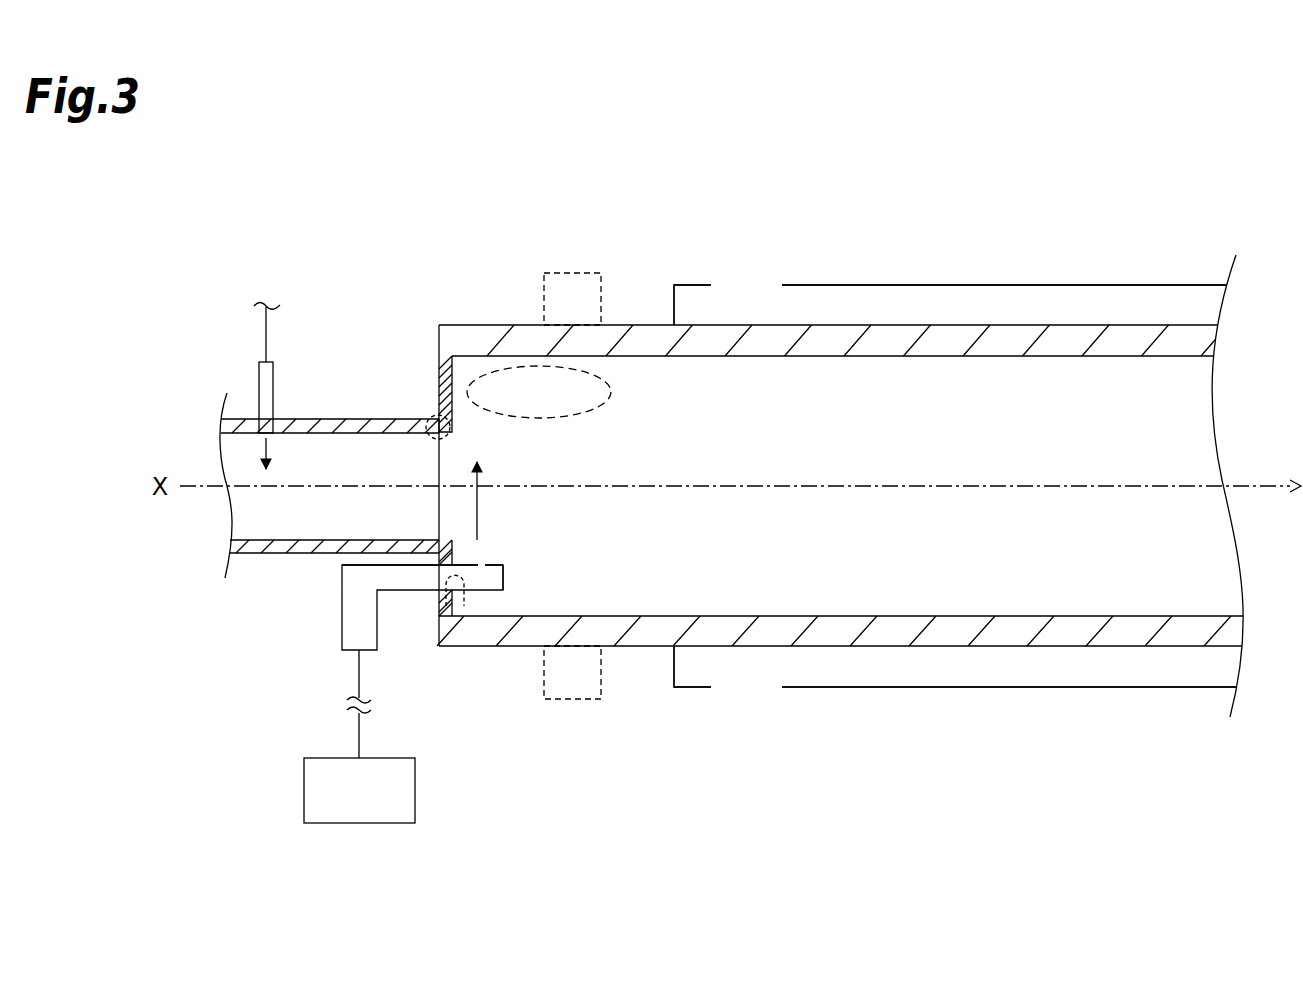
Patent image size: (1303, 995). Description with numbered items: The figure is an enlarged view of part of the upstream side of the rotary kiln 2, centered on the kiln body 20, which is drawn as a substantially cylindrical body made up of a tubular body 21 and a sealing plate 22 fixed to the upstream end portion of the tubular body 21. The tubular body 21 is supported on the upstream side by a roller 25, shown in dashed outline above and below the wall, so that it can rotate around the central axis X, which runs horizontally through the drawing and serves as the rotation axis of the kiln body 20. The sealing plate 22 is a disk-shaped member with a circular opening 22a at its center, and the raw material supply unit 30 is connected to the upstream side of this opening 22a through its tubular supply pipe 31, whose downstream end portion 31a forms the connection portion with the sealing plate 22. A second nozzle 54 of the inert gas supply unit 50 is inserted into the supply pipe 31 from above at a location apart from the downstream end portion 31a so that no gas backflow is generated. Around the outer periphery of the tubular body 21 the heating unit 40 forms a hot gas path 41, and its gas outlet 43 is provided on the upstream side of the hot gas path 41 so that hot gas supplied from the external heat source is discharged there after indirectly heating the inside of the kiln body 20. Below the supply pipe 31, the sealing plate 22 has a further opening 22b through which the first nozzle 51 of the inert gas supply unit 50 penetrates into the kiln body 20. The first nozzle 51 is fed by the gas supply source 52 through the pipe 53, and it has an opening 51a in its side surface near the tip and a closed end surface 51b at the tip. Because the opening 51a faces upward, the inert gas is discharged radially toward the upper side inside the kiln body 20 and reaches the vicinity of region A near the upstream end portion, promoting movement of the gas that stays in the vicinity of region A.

The rotary kiln 2 is at (313, 190).
The kiln body 20 is at (483, 284).
The tubular body 21 is at (636, 648).
The sealing plate 22 is at (438, 365).
The opening 22a is at (434, 416).
The opening for a nozzle 22b is at (460, 602).
The roller 25 is at (576, 273).
The raw material supply unit 30 is at (329, 463).
The supply pipe 31 is at (304, 419).
The downstream end portion 31a is at (438, 412).
The heating unit 40 is at (929, 222).
The hot gas path 41 is at (1013, 285).
The gas outlet 43 is at (743, 287).
The inert gas supply unit 50 is at (222, 638).
The first nozzle 51 is at (342, 613).
The opening 51a is at (475, 565).
The end surface 51b is at (504, 580).
The gas supply source 52 is at (304, 788).
The pipe 53 is at (358, 680).
The second nozzle 54 is at (257, 382).
The region A is at (598, 367).